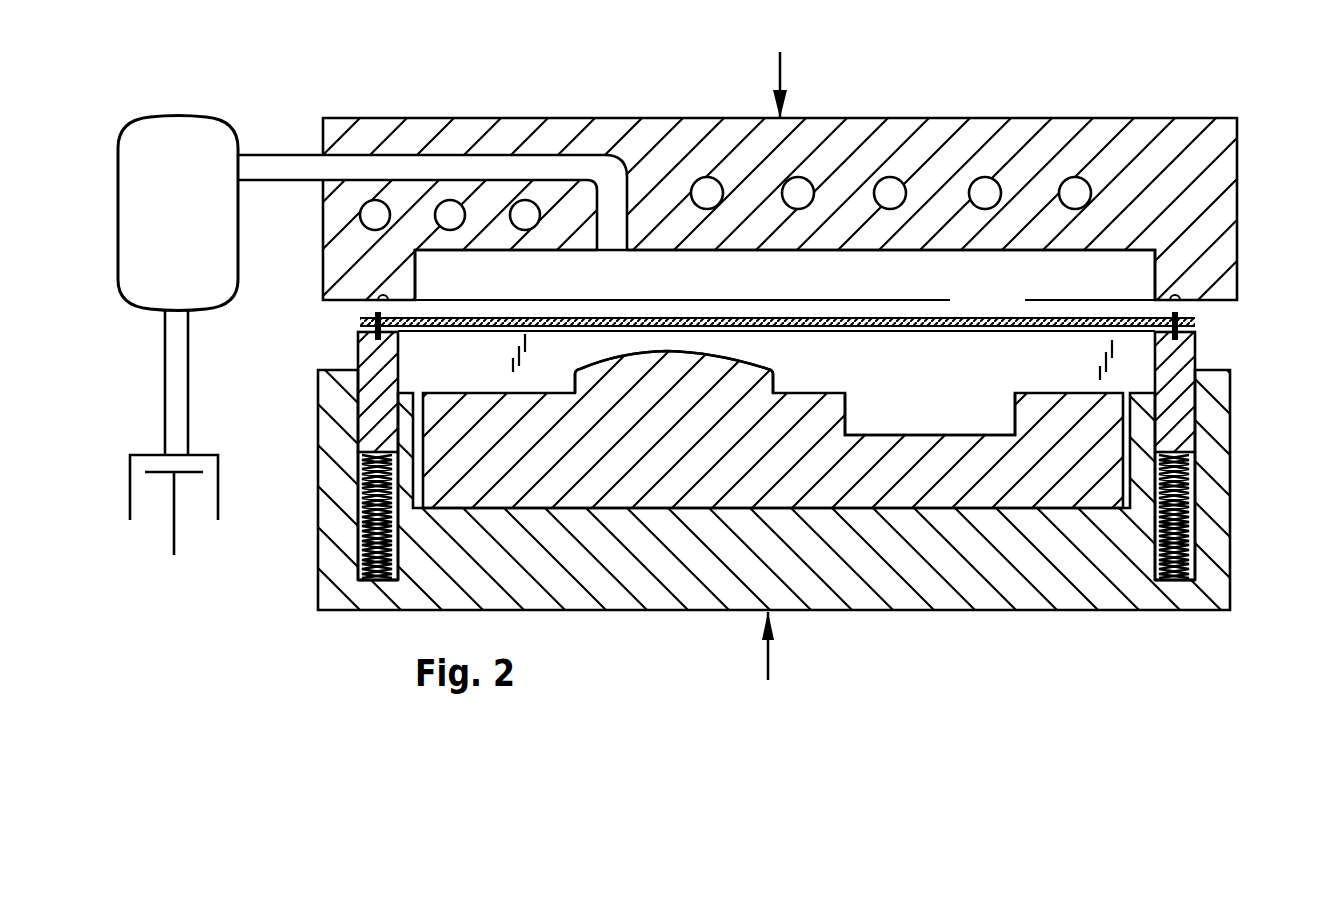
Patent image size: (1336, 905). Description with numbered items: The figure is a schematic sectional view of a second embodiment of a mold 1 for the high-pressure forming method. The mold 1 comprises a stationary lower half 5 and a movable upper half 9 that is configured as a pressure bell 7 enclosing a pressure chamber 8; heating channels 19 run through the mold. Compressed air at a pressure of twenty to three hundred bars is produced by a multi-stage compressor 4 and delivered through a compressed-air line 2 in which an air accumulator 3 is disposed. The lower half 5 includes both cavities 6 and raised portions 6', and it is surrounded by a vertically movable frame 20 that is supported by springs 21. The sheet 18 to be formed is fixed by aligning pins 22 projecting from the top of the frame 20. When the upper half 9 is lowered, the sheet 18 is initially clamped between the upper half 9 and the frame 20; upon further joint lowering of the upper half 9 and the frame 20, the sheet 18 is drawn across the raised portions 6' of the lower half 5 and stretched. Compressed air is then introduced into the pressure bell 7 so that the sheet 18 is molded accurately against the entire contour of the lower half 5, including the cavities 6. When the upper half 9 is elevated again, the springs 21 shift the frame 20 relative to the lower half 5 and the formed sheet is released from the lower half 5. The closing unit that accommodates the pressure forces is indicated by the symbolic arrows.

The mold 1 is at (1262, 131).
The compressed-air line 2 is at (165, 390).
The air accumulator 3 is at (197, 117).
The multi-stage compressor 4 is at (218, 505).
The lower half 5 is at (950, 500).
The cavity 6 is at (930, 391).
The raised portion 6' is at (714, 367).
The pressure bell 7 is at (1113, 259).
The pressure chamber 8 is at (845, 275).
The upper half 9 is at (1148, 136).
The sheet 18 is at (1003, 320).
The heating channels 19 is at (368, 221).
The frame 20 is at (1190, 360).
The springs 21 is at (1188, 510).
The aligning pins 22 is at (1182, 318).